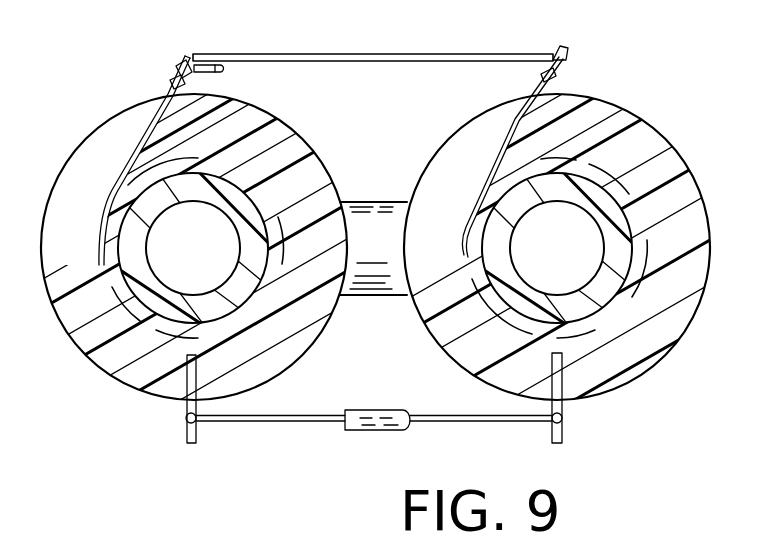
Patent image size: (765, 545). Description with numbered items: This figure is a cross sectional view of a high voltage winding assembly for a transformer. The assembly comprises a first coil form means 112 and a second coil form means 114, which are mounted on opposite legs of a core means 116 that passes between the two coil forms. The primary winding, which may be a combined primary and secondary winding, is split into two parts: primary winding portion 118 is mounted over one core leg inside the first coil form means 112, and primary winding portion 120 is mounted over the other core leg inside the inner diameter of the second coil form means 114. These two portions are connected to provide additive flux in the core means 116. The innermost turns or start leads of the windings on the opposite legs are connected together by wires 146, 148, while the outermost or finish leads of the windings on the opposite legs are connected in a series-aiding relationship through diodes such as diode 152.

The first coil form means 112 is at (112, 135).
The second coil form means 114 is at (640, 135).
The core means 116 is at (383, 202).
The primary winding portion 118 is at (162, 266).
The primary winding portion 120 is at (522, 266).
The wire 146 is at (226, 73).
The wire 148 is at (470, 50).
The diode 152 is at (363, 431).